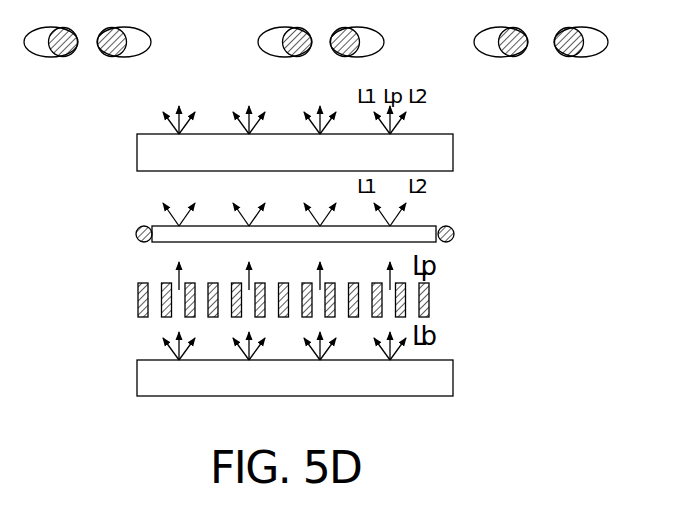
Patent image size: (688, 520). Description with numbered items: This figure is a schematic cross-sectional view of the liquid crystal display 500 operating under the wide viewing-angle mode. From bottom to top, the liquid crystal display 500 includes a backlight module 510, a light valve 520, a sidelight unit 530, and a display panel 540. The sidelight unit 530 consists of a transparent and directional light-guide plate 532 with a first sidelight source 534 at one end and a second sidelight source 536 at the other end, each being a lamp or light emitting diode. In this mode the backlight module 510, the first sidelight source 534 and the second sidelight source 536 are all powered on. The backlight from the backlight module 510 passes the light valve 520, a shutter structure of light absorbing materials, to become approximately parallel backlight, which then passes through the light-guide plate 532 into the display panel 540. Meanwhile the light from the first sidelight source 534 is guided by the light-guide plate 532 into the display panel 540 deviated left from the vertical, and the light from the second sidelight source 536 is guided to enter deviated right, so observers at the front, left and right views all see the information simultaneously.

The liquid crystal display 500 is at (314, 267).
The backlight module 510 is at (137, 371).
The light valve 520 is at (438, 301).
The sidelight unit 530 is at (314, 234).
The light-guide plate 532 is at (177, 243).
The first sidelight source 534 is at (136, 232).
The second sidelight source 536 is at (445, 225).
The display panel 540 is at (137, 144).